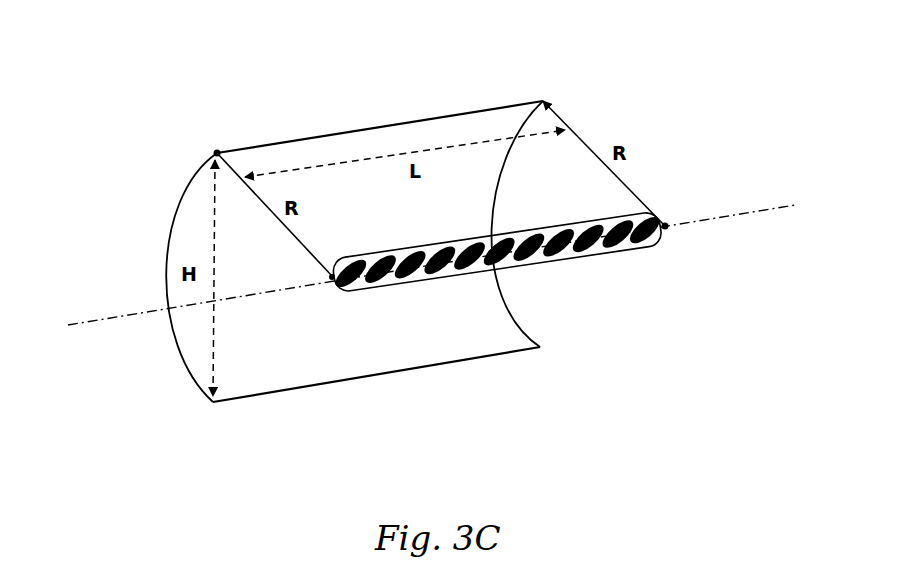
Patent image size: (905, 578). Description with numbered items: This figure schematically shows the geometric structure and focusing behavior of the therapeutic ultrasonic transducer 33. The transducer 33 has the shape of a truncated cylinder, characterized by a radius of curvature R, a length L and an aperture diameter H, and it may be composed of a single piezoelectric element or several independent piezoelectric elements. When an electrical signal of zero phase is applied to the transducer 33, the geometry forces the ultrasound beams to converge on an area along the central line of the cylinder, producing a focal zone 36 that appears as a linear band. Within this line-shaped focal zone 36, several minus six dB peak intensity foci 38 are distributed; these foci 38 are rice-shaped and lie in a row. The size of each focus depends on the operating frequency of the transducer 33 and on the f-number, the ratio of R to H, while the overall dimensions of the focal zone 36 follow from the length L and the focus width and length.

The therapeutic ultrasonic transducer 33 is at (320, 136).
The focal zone 36 is at (647, 247).
The peak intensity foci 38 is at (567, 260).